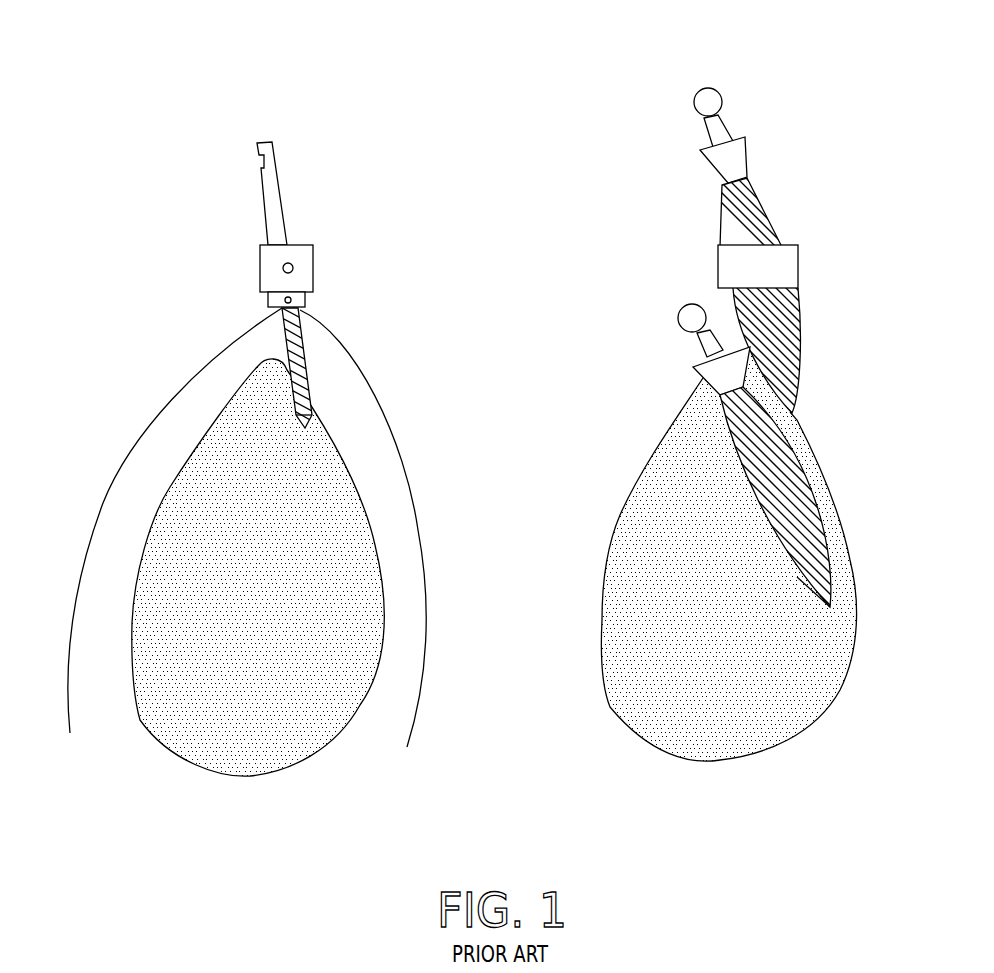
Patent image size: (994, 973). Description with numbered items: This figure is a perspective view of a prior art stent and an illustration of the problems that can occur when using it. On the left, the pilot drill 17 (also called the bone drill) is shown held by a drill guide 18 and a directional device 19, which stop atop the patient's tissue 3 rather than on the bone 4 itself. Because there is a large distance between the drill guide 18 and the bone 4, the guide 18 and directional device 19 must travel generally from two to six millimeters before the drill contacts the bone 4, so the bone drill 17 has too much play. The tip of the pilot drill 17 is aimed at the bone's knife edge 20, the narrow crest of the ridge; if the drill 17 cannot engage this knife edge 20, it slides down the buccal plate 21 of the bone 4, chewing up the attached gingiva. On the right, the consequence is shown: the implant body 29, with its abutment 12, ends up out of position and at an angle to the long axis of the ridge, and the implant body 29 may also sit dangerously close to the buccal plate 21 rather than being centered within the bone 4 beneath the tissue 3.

The tissue 3 is at (195, 388).
The bone 4 is at (332, 480).
The abutment 12 is at (725, 127).
The pilot drill 17 is at (280, 200).
The drill guide 18 is at (270, 268).
The directional device 19 is at (298, 300).
The knife edge 20 is at (275, 358).
The buccal plate 21 is at (840, 607).
The implant body 29 is at (800, 317).